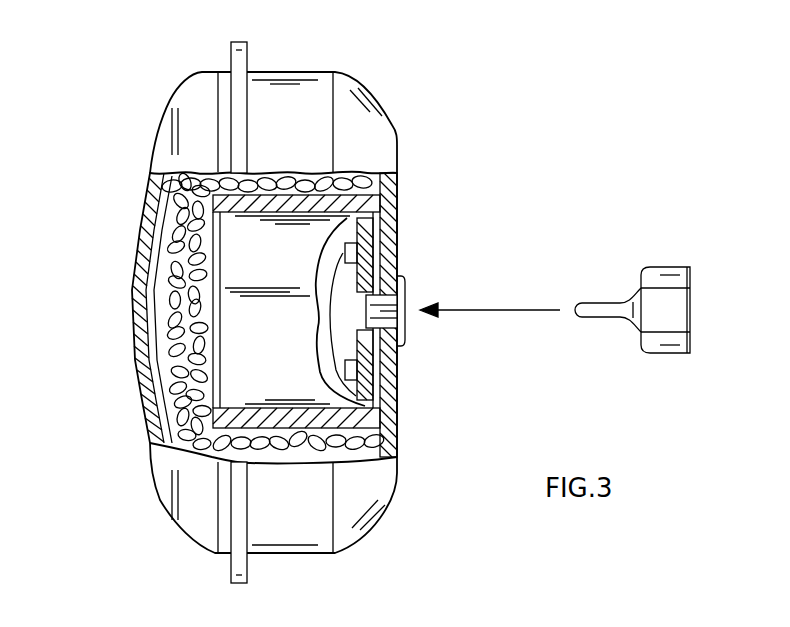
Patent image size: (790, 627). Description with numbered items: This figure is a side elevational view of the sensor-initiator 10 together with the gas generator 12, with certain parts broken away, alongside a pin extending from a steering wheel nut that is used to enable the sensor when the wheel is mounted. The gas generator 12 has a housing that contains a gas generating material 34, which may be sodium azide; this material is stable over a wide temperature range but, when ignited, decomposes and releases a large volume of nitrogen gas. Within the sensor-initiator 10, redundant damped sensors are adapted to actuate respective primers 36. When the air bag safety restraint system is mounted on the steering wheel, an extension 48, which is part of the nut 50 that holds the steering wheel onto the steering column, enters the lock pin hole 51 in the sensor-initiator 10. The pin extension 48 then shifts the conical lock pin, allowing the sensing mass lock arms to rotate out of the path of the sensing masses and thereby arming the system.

The sensor-initiator 10 is at (247, 372).
The gas generator 12 is at (123, 131).
The gas generating material 34 is at (186, 227).
The primers 36 is at (318, 319).
The extension 48 is at (580, 302).
The nut 50 is at (657, 268).
The lock pin hole 51 is at (405, 309).